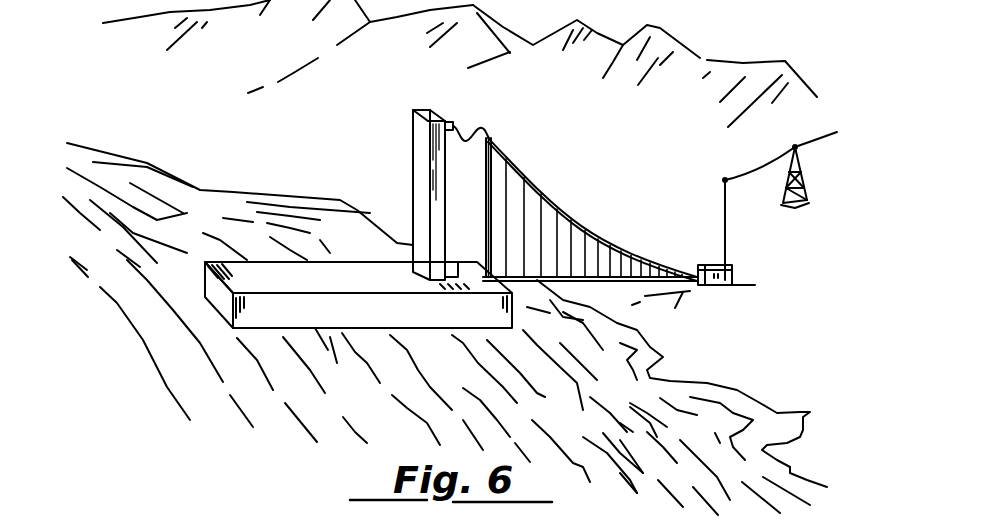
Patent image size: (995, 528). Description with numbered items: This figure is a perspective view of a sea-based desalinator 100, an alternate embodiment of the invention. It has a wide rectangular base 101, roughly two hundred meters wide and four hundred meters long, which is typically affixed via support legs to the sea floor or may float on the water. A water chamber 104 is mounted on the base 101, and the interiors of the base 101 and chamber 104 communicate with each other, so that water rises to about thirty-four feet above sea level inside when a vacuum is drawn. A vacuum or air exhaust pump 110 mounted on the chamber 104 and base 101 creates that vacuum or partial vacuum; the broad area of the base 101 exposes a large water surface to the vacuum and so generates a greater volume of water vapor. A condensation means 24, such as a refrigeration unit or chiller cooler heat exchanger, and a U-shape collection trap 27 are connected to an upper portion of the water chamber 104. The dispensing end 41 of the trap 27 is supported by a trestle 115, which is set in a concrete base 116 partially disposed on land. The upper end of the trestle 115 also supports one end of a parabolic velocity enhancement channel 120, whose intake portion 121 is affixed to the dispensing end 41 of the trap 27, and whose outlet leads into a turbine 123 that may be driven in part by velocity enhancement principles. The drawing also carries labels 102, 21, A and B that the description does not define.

The sea-based desalinator 100 is at (521, 203).
The wide rectangular base 101 is at (370, 320).
The water chamber 104 is at (415, 128).
The vacuum or air exhaust pump 110 is at (448, 258).
The condensation means 24 is at (447, 123).
The U-shape collection trap 27 is at (486, 138).
The dispensing end 41 is at (490, 136).
The bridge span 102 is at (619, 214).
The intake portion 121 is at (510, 143).
The trestle 115 is at (580, 242).
The concrete base 116 is at (643, 279).
The velocity enhancement channel 120 is at (691, 263).
The turbine 123 is at (735, 274).
The ground 21 is at (363, 407).
The point A is at (529, 166).
The point B is at (628, 249).